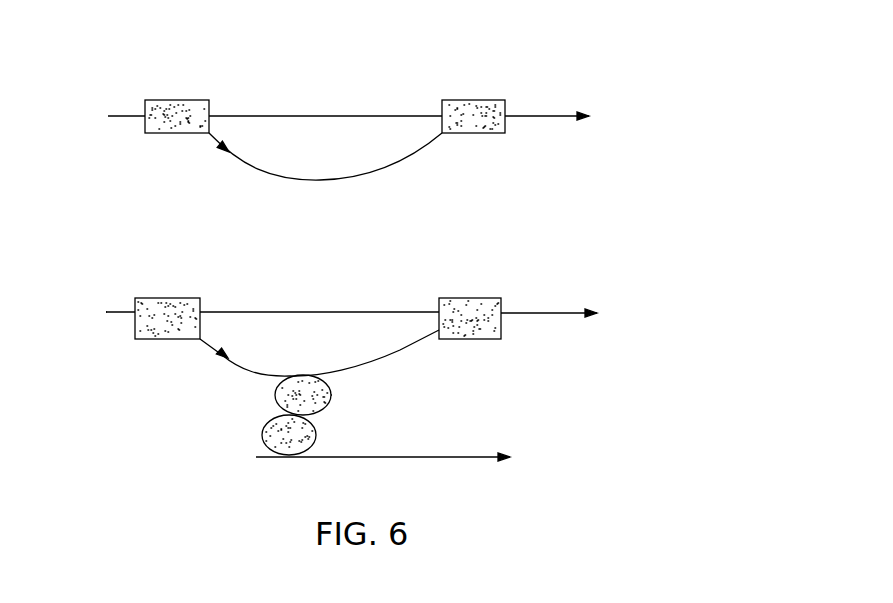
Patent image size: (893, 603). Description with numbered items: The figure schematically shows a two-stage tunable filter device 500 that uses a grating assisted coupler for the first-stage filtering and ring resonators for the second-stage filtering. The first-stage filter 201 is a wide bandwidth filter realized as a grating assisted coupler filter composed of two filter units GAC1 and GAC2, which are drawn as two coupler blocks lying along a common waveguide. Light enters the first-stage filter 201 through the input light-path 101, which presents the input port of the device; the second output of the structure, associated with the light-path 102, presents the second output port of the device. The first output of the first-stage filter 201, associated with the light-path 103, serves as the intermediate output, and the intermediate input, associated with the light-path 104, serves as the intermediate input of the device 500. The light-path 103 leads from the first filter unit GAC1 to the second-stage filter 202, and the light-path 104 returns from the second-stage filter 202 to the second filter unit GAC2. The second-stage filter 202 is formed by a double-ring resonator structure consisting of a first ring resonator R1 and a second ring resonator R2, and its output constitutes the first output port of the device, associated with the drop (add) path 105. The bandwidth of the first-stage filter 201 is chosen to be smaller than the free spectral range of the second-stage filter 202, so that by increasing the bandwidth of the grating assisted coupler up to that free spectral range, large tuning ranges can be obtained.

The input light-path 101 is at (112, 200).
The second output light-path 102 is at (556, 200).
The first output light-path 103 is at (260, 254).
The intermediate input light-path 104 is at (366, 254).
The drop (add) path 105 is at (383, 474).
The first-stage filter 201 is at (311, 90).
The second-stage filter 202 is at (366, 410).
The filter device 500 is at (142, 276).
The first grating assisted coupler filter unit GAC1 is at (164, 112).
The second grating assisted coupler filter unit GAC2 is at (476, 112).
The first ring resonator R1 is at (283, 402).
The second ring resonator R2 is at (270, 439).